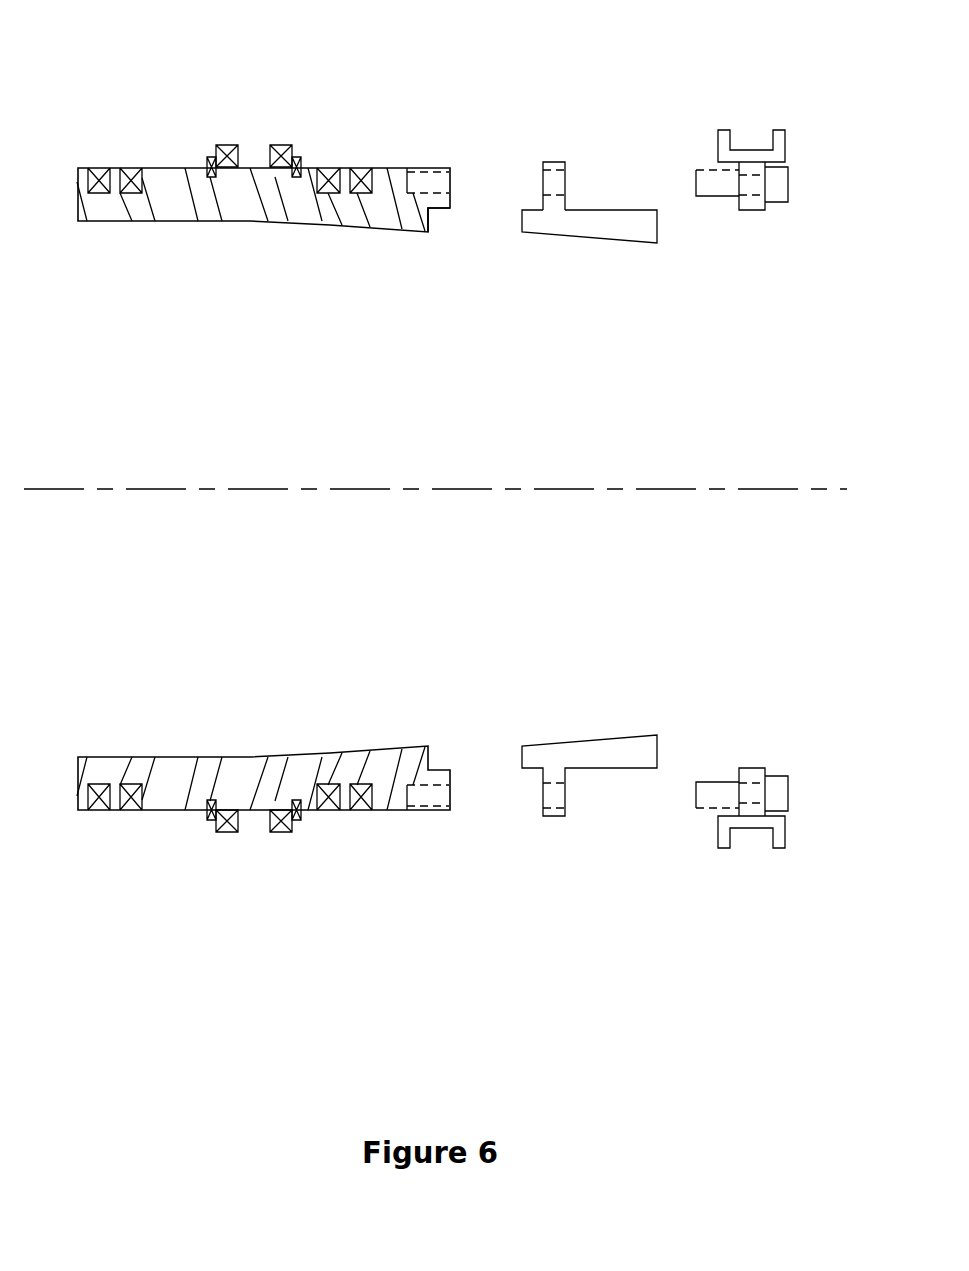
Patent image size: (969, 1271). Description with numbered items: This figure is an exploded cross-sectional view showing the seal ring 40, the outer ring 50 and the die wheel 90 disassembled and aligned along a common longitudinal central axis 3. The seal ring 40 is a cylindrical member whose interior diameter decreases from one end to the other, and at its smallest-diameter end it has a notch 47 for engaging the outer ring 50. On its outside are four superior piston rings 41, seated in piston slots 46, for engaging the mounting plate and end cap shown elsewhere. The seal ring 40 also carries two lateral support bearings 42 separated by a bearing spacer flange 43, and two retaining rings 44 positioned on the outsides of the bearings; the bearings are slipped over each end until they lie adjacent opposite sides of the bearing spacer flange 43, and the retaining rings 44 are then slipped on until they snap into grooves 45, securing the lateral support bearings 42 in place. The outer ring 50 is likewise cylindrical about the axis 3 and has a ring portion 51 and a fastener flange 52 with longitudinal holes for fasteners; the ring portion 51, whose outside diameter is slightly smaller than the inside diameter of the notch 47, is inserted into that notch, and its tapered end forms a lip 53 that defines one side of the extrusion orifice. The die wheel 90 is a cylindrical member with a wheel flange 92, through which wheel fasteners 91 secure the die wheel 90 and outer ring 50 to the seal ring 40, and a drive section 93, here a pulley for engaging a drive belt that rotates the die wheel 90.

The longitudinal central axis 3 is at (462, 489).
The seal ring 40 is at (270, 265).
The superior piston rings 41 is at (362, 167).
The lateral support bearings 42 is at (278, 832).
The bearing spacer flange 43 is at (260, 163).
The retaining rings 44 is at (210, 162).
The grooves 45 is at (293, 800).
The piston slots 46 is at (130, 195).
The notch 47 is at (430, 218).
The outer ring 50 is at (576, 185).
The ring portion 51 is at (618, 228).
The fastener flange 52 is at (540, 168).
The lip 53 is at (655, 733).
The die wheel 90 is at (741, 181).
The wheel fasteners 91 is at (790, 788).
The wheel flange 92 is at (752, 212).
The drive section 93 is at (780, 848).